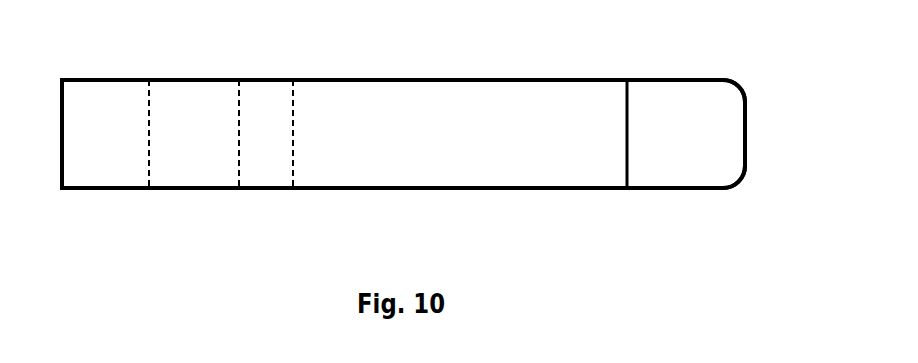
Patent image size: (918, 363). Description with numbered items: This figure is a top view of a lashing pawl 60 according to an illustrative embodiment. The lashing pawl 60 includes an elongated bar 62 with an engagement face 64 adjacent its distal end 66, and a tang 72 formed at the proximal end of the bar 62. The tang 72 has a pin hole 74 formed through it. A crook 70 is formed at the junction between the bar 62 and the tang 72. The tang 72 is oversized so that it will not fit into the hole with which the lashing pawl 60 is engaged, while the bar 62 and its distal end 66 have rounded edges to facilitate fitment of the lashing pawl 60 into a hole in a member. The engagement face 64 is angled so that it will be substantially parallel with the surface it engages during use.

The lashing pawl 60 is at (394, 52).
The elongated bar 62 is at (436, 190).
The engagement face 64 is at (625, 99).
The distal end 66 is at (746, 150).
The crook 70 is at (293, 172).
The tang 72 is at (62, 90).
The pin hole 74 is at (149, 162).